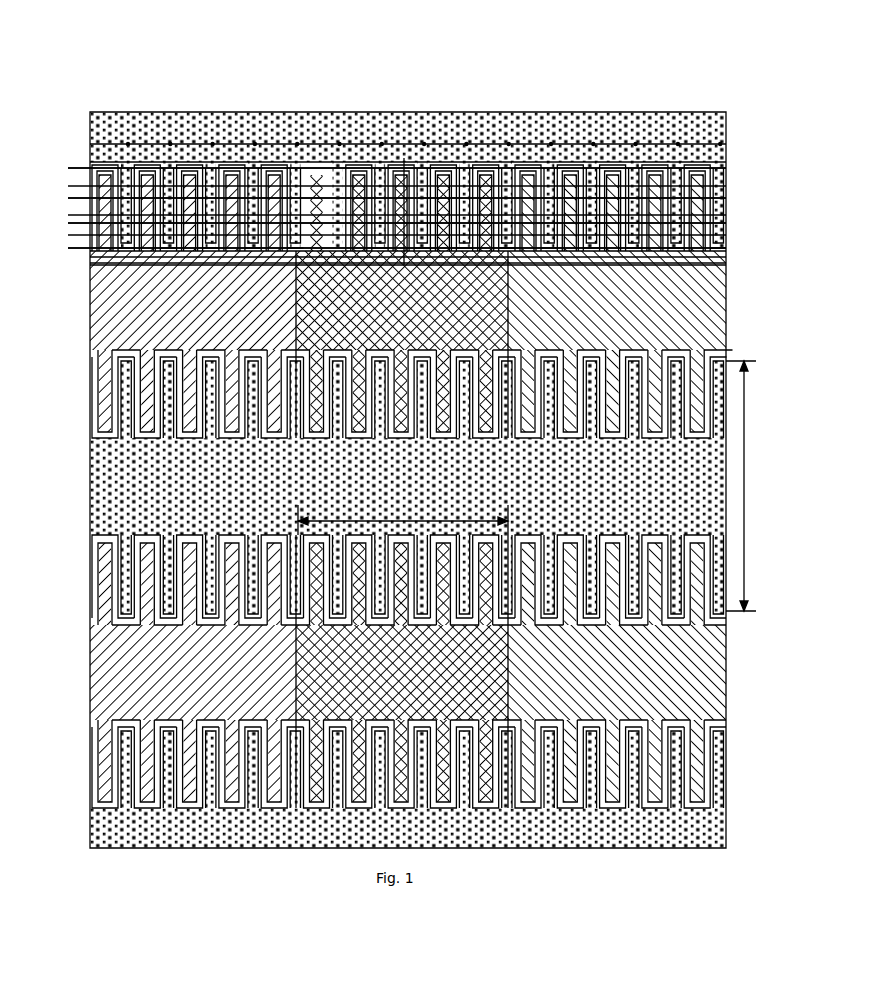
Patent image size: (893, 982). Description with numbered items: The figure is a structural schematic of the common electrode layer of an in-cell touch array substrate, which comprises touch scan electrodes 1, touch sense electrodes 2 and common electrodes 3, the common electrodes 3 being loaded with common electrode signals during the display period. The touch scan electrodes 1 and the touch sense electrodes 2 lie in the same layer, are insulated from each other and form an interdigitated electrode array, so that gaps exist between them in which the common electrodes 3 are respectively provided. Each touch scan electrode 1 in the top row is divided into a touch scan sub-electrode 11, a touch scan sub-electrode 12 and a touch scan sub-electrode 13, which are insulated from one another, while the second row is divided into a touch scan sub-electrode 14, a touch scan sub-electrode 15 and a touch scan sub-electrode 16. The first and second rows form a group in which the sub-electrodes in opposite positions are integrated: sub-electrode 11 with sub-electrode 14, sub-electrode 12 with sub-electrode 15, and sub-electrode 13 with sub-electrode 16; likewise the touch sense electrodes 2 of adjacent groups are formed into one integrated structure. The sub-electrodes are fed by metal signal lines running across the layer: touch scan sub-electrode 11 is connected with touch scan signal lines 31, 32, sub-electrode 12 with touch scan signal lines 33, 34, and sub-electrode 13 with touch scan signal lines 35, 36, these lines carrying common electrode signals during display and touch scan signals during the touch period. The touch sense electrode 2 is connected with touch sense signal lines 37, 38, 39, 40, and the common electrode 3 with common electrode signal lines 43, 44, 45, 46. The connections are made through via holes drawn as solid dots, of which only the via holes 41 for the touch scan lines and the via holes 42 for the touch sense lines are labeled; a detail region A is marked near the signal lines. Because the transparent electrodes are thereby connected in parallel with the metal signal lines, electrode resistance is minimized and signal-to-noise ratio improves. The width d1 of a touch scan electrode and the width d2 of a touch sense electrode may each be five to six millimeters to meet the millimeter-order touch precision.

The touch scan electrode 1 is at (377, 237).
The touch sense electrode 2 is at (162, 160).
The common electrode 3 is at (237, 160).
The touch scan sub-electrode 11 is at (268, 163).
The touch scan sub-electrode 12 is at (396, 160).
The touch scan sub-electrode 13 is at (525, 163).
The touch scan sub-electrode 14 is at (140, 398).
The touch scan sub-electrode 15 is at (303, 388).
The touch scan sub-electrode 16 is at (520, 386).
The touch scan signal line 31 is at (60, 160).
The touch scan signal line 32 is at (60, 240).
The touch scan signal line 33 is at (60, 190).
The touch scan signal line 34 is at (82, 250).
The touch scan signal line 35 is at (60, 215).
The touch scan signal line 36 is at (82, 256).
The touch sense signal line 37 is at (718, 136).
The touch sense signal line 38 is at (718, 178).
The touch sense signal line 39 is at (718, 207).
The touch sense signal line 40 is at (718, 227).
The via hole 41 is at (107, 158).
The via hole 42 is at (122, 136).
The common electrode signal line 43 is at (718, 160).
The common electrode signal line 44 is at (718, 190).
The common electrode signal line 45 is at (718, 215).
The common electrode signal line 46 is at (718, 240).
The region A is at (505, 253).
The width of the touch scan electrode d1 is at (403, 520).
The width of the touch sense electrode d2 is at (741, 486).